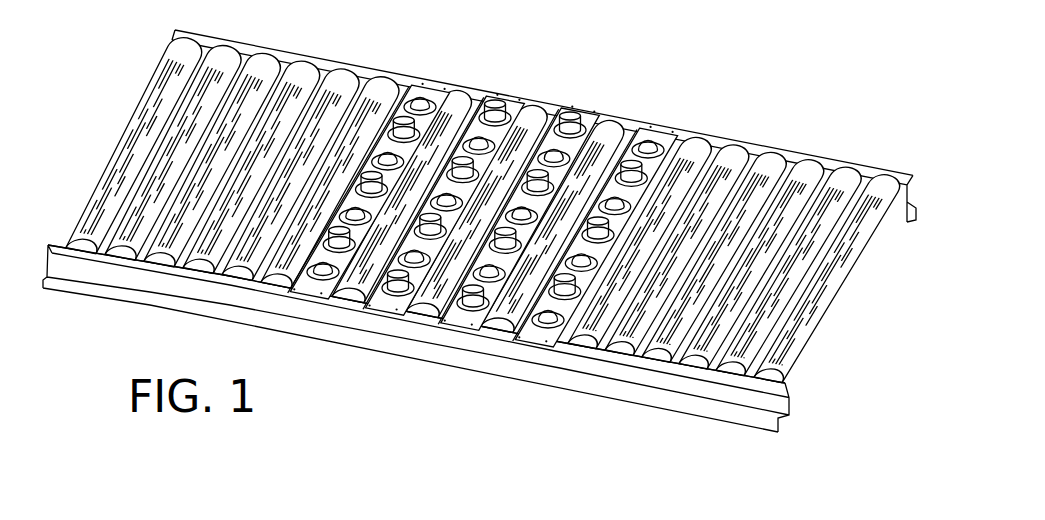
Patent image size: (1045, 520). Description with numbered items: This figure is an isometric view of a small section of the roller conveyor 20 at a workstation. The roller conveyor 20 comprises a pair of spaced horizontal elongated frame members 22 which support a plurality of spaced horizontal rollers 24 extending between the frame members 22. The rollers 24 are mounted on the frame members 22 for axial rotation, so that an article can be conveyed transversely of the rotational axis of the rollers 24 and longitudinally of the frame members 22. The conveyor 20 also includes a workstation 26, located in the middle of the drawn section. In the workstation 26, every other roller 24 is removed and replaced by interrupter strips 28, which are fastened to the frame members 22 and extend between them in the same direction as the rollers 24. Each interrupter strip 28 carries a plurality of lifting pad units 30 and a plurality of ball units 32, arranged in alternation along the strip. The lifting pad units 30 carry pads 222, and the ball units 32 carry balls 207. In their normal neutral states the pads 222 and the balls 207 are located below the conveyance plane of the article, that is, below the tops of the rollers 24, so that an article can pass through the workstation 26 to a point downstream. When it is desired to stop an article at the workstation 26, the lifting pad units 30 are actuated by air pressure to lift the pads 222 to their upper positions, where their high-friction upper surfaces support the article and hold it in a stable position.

The roller conveyor 20 is at (479, 231).
The frame members 22 is at (50, 244).
The rollers 24 is at (877, 183).
The workstation 26 is at (470, 229).
The interrupter strips 28 is at (648, 137).
The lifting pad units 30 is at (557, 130).
The ball units 32 is at (473, 140).
The pads 222 is at (473, 303).
The balls 207 is at (547, 322).